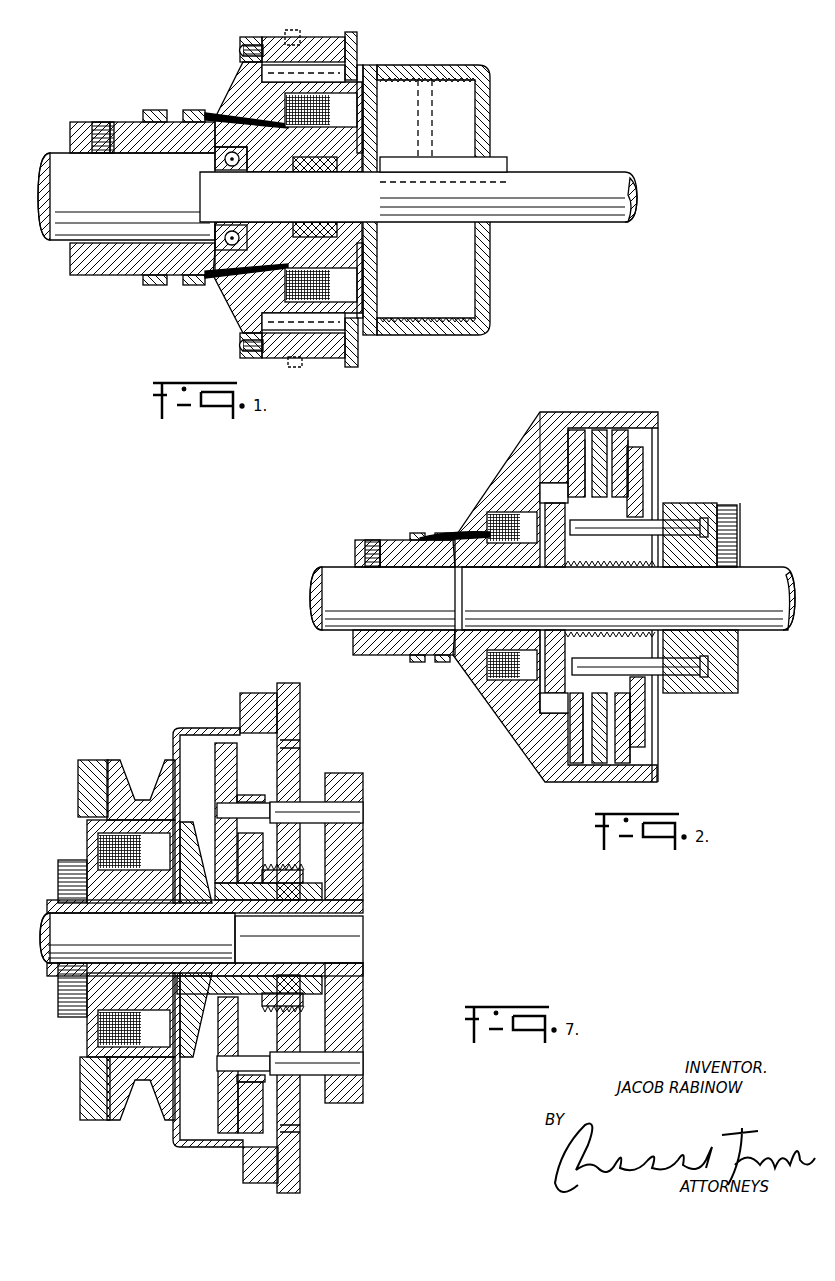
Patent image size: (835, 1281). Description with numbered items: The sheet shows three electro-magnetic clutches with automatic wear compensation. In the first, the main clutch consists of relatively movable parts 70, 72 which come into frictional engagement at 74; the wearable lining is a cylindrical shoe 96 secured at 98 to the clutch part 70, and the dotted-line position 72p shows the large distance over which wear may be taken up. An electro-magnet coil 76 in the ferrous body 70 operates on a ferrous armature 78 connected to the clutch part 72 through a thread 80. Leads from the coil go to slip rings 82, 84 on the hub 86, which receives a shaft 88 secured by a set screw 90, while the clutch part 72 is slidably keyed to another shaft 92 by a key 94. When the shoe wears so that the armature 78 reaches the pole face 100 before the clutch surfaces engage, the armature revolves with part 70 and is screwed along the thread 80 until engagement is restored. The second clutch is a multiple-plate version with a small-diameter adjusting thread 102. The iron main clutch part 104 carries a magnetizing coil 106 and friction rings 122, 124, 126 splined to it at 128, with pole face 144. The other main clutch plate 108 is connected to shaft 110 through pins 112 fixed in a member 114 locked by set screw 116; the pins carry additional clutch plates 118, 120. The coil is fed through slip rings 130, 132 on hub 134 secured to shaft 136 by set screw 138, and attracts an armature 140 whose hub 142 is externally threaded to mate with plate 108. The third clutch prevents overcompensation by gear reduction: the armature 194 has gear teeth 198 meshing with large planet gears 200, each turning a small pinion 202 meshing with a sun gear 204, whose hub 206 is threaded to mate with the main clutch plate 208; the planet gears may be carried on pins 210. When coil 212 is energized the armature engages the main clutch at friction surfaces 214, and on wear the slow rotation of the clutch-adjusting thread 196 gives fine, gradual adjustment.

In FIG. 1, the main clutch part 70 is at (235, 92).
In FIG. 1, the main clutch part 72 is at (468, 65).
In FIG. 1, the dotted line position of clutch part 72p is at (297, 36).
In FIG. 1, the frictional engagement 74 is at (350, 32).
In FIG. 1, the electro-magnet coil 76 is at (252, 310).
In FIG. 1, the armature 78 is at (373, 100).
In FIG. 1, the thread 80 is at (385, 66).
In FIG. 1, the slip ring 82 is at (158, 110).
In FIG. 1, the slip ring 84 is at (203, 94).
In FIG. 1, the hub 86 is at (128, 122).
In FIG. 1, the shaft 88 is at (48, 153).
In FIG. 1, the set screw 90 is at (100, 122).
In FIG. 1, the shaft 92 is at (565, 175).
In FIG. 1, the key 94 is at (497, 157).
In FIG. 1, the cylindrical shoe 96 is at (310, 360).
In FIG. 1, the securing means 98 is at (240, 48).
In FIG. 1, the pole face 100 is at (360, 65).
In FIG. 2, the adjusting thread 102 is at (630, 567).
In FIG. 2, the main clutch part 104 is at (552, 708).
In FIG. 2, the magnetizing coil 106 is at (480, 525).
In FIG. 2, the main clutch plate 108 is at (643, 460).
In FIG. 2, the shaft 110 is at (773, 567).
In FIG. 2, the pins 112 is at (695, 525).
In FIG. 2, the member 114 is at (705, 695).
In FIG. 2, the set screw 116 is at (728, 505).
In FIG. 2, the clutch plate 118 is at (582, 430).
In FIG. 2, the clutch plate 120 is at (607, 450).
In FIG. 2, the friction ring 122 is at (572, 430).
In FIG. 2, the friction ring 124 is at (598, 440).
In FIG. 2, the friction ring 126 is at (622, 440).
In FIG. 2, the spline 128 is at (655, 432).
In FIG. 2, the slip ring 130 is at (417, 533).
In FIG. 2, the slip ring 132 is at (441, 533).
In FIG. 2, the hub 134 is at (390, 540).
In FIG. 2, the shaft 136 is at (325, 568).
In FIG. 2, the set screw 138 is at (370, 540).
In FIG. 2, the armature 140 is at (560, 700).
In FIG. 2, the hub 142 is at (585, 567).
In FIG. 2, the pole face 144 is at (500, 710).
In FIG. 7, the armature 194 is at (188, 822).
In FIG. 7, the clutch-adjusting thread 196 is at (285, 870).
In FIG. 7, the gear teeth 198 is at (210, 905).
In FIG. 7, the planet gears 200 is at (215, 760).
In FIG. 7, the pinion 202 is at (252, 790).
In FIG. 7, the sun gear 204 is at (252, 845).
In FIG. 7, the hub 206 is at (363, 892).
In FIG. 7, the main clutch plate 208 is at (300, 720).
In FIG. 7, the pins 210 is at (363, 805).
In FIG. 7, the coil 212 is at (95, 845).
In FIG. 7, the friction surfaces 214 is at (277, 690).